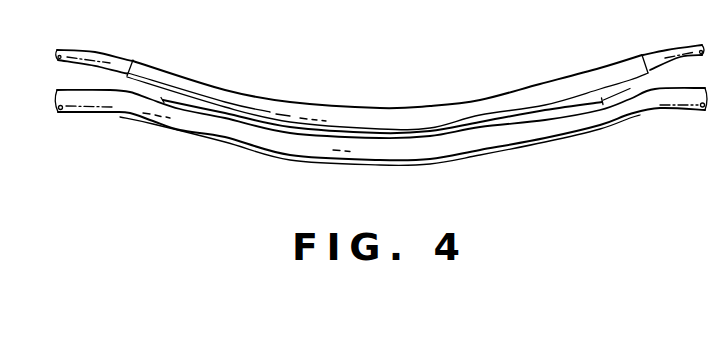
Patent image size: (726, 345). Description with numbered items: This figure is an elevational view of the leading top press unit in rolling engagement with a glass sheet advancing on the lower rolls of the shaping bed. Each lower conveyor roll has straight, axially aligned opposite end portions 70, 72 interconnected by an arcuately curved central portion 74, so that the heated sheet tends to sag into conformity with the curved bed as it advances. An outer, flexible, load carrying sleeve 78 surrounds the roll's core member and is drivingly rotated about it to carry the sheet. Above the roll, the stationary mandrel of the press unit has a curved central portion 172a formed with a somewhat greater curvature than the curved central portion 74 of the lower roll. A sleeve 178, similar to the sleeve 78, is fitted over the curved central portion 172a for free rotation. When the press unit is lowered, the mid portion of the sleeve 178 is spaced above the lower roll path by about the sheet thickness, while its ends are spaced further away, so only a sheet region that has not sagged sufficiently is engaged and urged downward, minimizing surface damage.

The curved central portion 172a is at (110, 55).
The sleeve 178 is at (449, 107).
The end portion 70 is at (73, 114).
The end portion 72 is at (688, 108).
The arcuately curved central portion 74 is at (243, 156).
The sleeve 78 is at (528, 150).